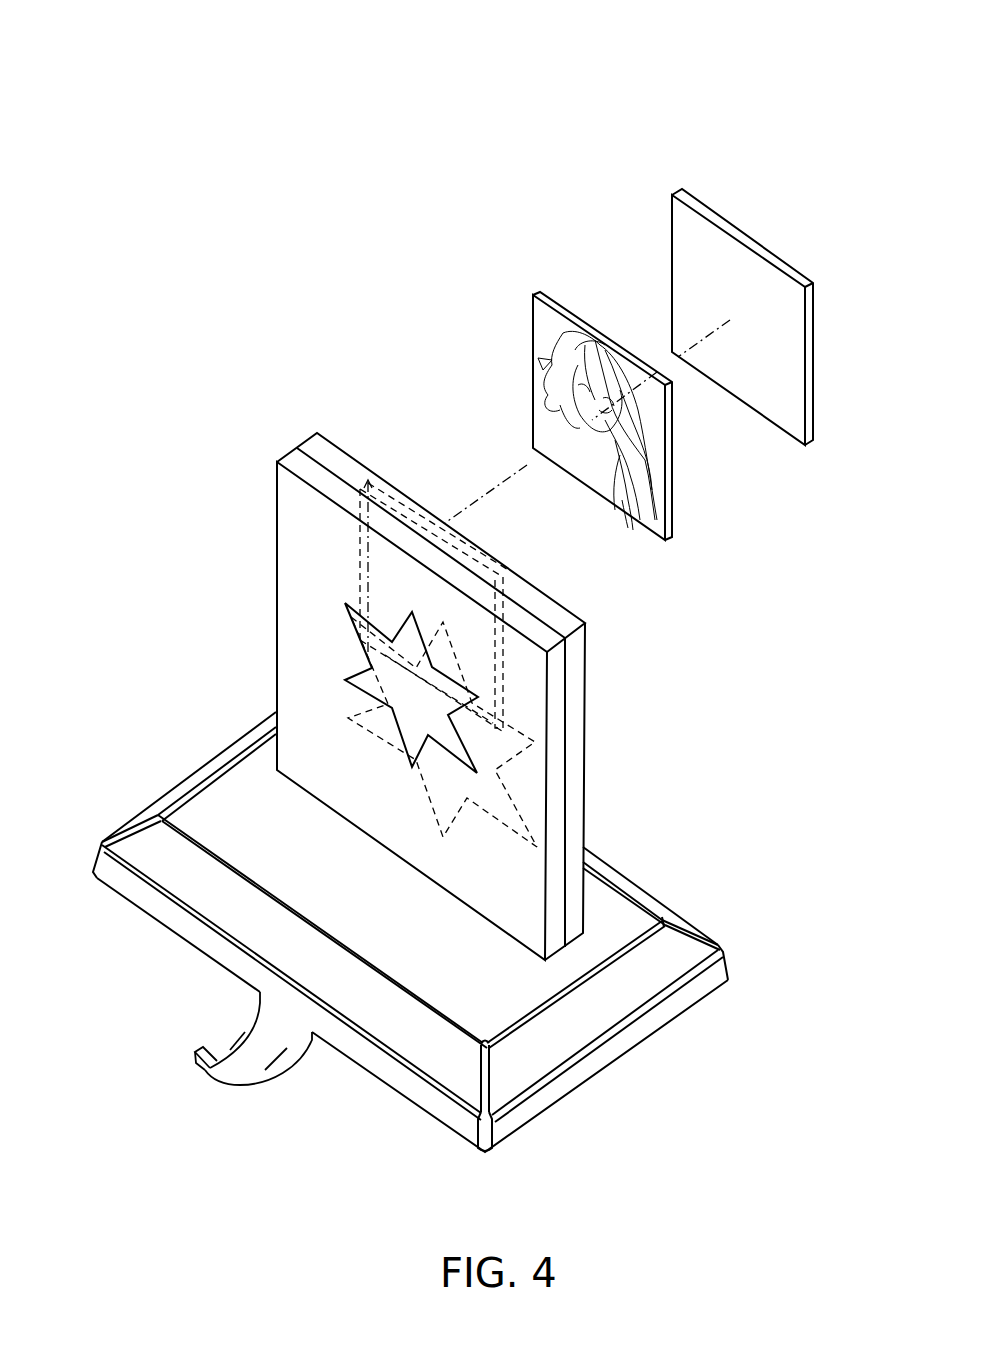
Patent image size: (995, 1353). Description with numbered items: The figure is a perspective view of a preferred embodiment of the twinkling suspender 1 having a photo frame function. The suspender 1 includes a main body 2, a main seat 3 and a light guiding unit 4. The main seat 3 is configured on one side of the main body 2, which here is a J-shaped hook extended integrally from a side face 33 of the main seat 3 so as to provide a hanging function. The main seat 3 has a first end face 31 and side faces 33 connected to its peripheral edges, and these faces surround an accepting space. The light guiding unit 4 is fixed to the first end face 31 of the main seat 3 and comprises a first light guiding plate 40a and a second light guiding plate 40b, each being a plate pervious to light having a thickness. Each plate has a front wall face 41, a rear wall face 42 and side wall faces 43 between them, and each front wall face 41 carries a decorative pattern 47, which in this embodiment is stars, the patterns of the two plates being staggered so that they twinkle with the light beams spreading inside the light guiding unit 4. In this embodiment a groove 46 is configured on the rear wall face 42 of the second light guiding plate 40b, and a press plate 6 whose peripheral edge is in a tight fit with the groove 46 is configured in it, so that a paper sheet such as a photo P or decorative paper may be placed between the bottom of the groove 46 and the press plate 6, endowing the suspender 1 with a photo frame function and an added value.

The twinkling suspender 1 is at (245, 78).
The main body 2 is at (200, 1068).
The main seat 3 is at (665, 913).
The first end face 31 is at (540, 978).
The side faces 33 is at (190, 935).
The light guiding unit 4 is at (268, 424).
The first light guiding plate 40a is at (290, 515).
The second light guiding plate 40b is at (343, 462).
The front wall face 41 is at (290, 598).
The rear wall face 42 is at (586, 695).
The side wall faces 43 is at (557, 830).
The groove 46 is at (505, 653).
The decorative pattern 47 is at (348, 716).
The photo P is at (672, 462).
The press plate 6 is at (680, 243).